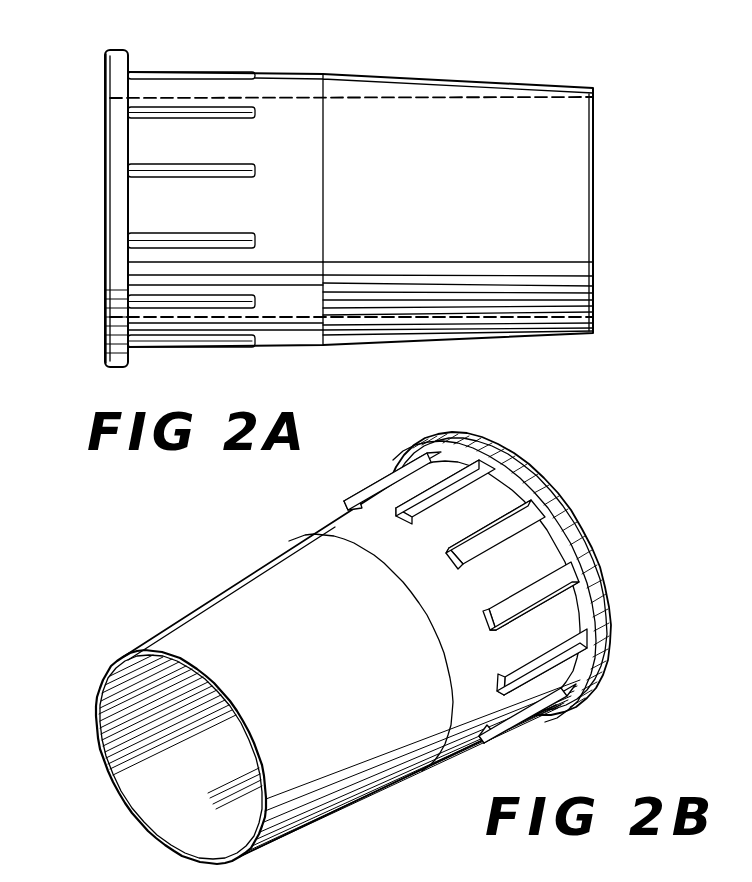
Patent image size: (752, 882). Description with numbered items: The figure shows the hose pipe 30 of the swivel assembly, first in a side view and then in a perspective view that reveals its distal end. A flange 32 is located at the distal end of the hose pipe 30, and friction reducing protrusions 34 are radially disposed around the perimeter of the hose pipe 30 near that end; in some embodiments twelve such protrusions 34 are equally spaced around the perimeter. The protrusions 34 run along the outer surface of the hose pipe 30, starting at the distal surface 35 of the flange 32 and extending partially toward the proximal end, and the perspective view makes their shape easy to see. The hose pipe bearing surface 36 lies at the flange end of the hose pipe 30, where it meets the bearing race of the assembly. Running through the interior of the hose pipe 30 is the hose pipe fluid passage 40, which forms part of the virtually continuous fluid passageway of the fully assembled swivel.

In FIG. 2A, the hose pipe 30 is at (548, 67).
In FIG. 2B, the hose pipe 30 is at (203, 597).
In FIG. 2A, the flange 32 is at (116, 50).
In FIG. 2B, the flange 32 is at (462, 432).
In FIG. 2A, the friction reducing protrusions 34 is at (237, 168).
In FIG. 2B, the friction reducing protrusions 34 is at (544, 582).
In FIG. 2A, the distal surface of flange 35 is at (130, 60).
In FIG. 2B, the distal surface of flange 35 is at (520, 487).
In FIG. 2A, the hose pipe bearing surface 36 is at (106, 68).
In FIG. 2A, the hose pipe fluid passage 40 is at (566, 112).
In FIG. 2B, the hose pipe fluid passage 40 is at (166, 788).